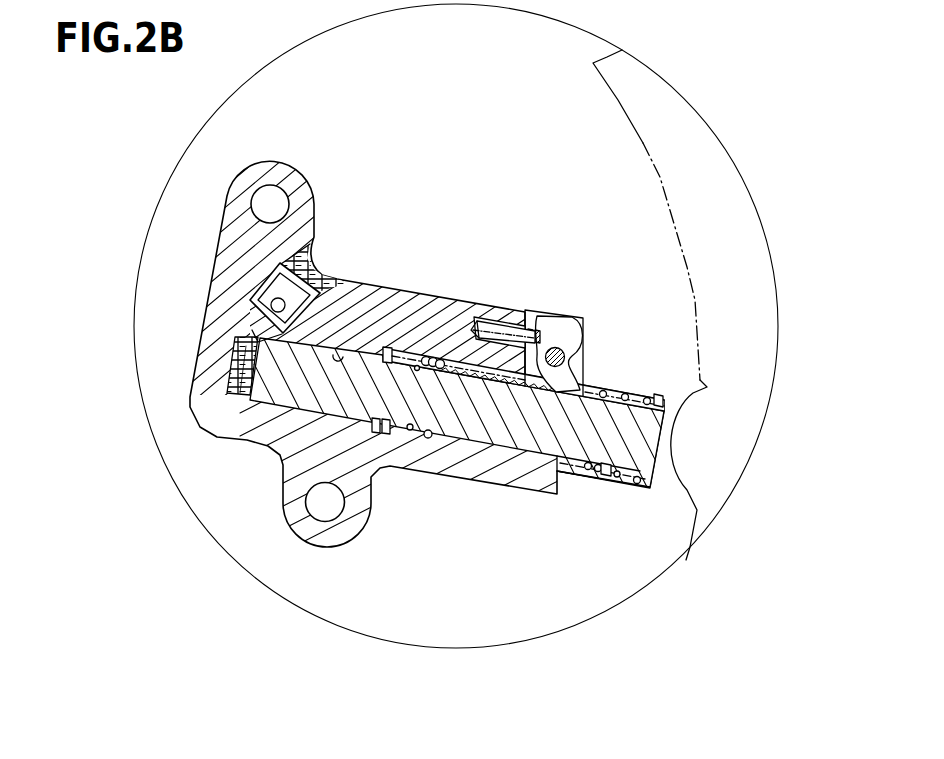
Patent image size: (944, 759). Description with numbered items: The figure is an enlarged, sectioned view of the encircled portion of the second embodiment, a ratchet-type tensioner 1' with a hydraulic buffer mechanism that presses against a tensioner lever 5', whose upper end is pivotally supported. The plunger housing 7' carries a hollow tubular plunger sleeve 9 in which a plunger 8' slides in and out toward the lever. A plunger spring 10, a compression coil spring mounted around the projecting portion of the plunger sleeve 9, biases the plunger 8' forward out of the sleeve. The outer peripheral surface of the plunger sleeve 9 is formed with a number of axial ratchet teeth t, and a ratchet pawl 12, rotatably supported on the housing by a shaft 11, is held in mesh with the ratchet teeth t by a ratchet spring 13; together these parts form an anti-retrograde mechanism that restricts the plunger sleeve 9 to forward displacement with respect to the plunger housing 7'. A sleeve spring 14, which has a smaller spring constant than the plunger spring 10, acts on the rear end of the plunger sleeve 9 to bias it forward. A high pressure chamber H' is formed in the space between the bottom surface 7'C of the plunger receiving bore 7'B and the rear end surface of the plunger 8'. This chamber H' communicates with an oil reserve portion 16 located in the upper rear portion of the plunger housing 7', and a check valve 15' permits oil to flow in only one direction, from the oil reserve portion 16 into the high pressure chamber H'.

The tensioner 1' is at (456, 326).
The tensioner lever 5' is at (706, 305).
The plunger housing 7' is at (424, 352).
The plunger receiving bore 7'B is at (391, 293).
The bottom surface 7'C is at (199, 361).
The plunger 8' is at (457, 435).
The plunger sleeve 9 is at (527, 460).
The plunger spring 10 is at (647, 398).
The shaft 11 is at (560, 327).
The ratchet pawl 12 is at (548, 318).
The ratchet spring 13 is at (492, 320).
The sleeve spring 14 is at (420, 445).
The check valve 15' is at (441, 293).
The oil reserve portion 16 is at (312, 258).
The ratchet teeth t is at (566, 358).
The high pressure chamber H' is at (231, 415).